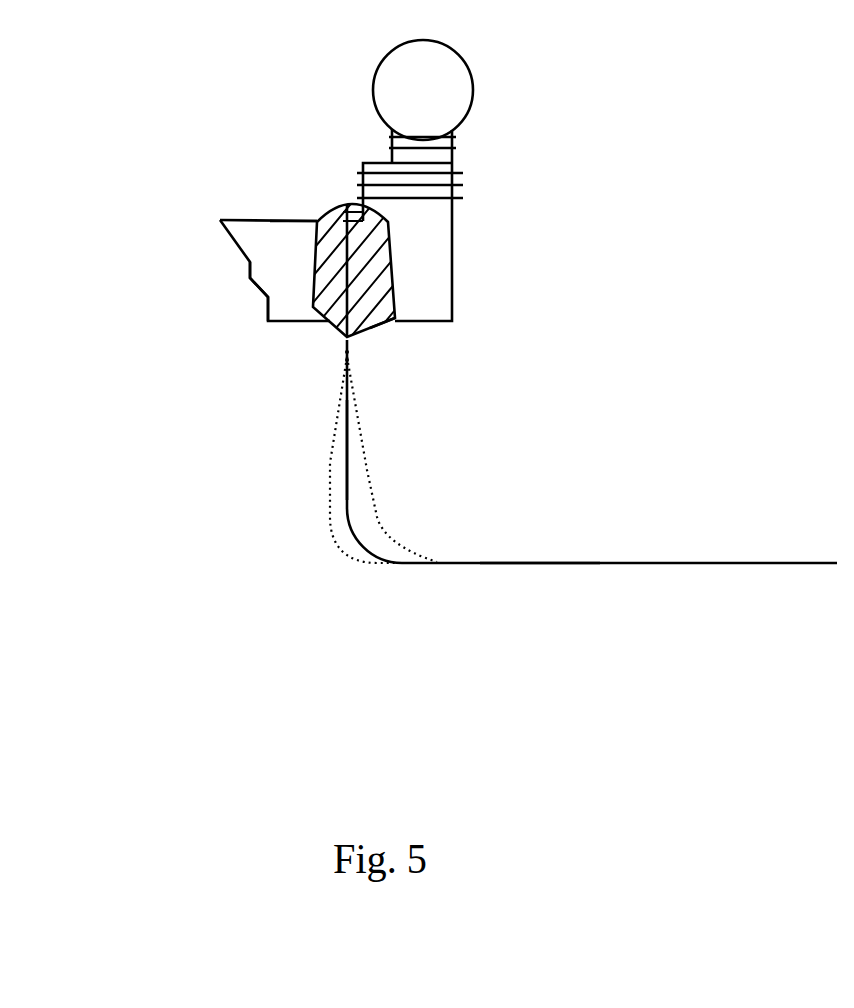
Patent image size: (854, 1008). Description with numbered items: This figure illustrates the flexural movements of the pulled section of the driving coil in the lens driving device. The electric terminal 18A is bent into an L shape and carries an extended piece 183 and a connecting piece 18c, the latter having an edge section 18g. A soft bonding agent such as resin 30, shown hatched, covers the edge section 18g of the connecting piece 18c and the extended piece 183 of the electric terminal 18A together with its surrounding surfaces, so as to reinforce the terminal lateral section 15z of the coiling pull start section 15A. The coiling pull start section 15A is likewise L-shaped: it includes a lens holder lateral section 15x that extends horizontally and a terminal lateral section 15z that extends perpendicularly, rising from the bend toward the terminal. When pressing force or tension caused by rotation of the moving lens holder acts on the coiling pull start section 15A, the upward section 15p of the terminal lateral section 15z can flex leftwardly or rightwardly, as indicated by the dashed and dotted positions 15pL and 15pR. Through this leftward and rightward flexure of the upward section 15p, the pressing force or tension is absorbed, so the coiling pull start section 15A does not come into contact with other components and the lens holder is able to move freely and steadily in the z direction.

The electric terminal 18A is at (260, 220).
The extended piece 183 is at (273, 278).
The connecting piece 18c is at (400, 173).
The resin 30 is at (365, 277).
The edge section 18g is at (272, 210).
The coiling pull start section 15A is at (602, 563).
The lens holder lateral section 15x is at (512, 563).
The upward section 15p is at (355, 533).
The terminal lateral section 15z is at (347, 478).
The leftward flexure position 15pL is at (343, 538).
The rightward flexure position 15pR is at (373, 490).